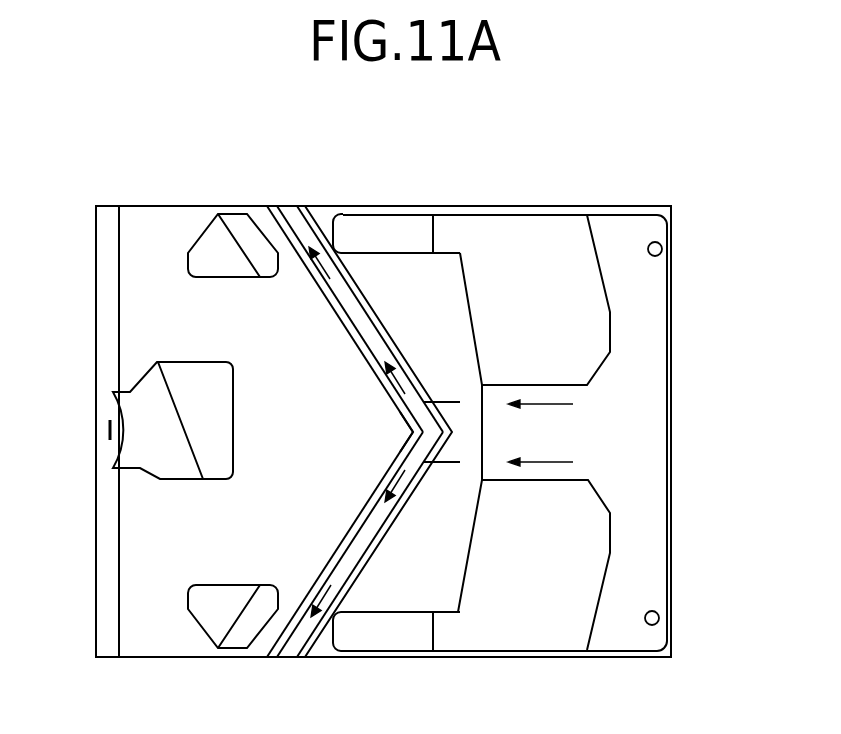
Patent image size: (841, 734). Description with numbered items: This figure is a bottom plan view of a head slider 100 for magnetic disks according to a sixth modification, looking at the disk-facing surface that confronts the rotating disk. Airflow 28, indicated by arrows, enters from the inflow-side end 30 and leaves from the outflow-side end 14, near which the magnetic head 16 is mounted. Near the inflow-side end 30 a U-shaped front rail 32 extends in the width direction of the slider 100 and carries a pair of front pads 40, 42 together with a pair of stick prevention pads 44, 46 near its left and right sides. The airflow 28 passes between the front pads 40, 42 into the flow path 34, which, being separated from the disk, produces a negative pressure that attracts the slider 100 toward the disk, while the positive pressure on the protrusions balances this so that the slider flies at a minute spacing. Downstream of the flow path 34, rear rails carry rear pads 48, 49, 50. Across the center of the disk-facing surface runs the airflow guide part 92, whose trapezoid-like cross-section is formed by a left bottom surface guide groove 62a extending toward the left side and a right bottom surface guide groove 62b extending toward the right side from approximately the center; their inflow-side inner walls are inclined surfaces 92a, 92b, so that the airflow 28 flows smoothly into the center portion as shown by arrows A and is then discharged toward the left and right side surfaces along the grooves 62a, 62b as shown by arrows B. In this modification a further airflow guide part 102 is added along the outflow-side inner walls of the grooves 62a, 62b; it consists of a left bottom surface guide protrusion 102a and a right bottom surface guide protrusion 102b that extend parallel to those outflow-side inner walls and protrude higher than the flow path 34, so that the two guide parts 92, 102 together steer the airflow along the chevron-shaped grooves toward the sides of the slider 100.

The slider 100 is at (481, 165).
The outflow-side end 14 is at (96, 574).
The magnetic head 16 is at (110, 430).
The airflow 28 is at (555, 404).
The inflow-side end 30 is at (671, 473).
The front rail 32 is at (657, 342).
The flow path 34 is at (385, 280).
The front pad 40 is at (552, 638).
The front pad 42 is at (552, 230).
The stick prevention pad 44 is at (660, 621).
The stick prevention pad 46 is at (668, 253).
The rear pad 48 is at (199, 628).
The rear pad 49 is at (157, 368).
The rear pad 50 is at (205, 236).
The left bottom surface guide groove 62a is at (370, 503).
The right bottom surface guide groove 62b is at (375, 363).
The airflow guide part 92 is at (431, 389).
The inclined surface 92a is at (383, 531).
The inclined surface 92b is at (384, 322).
The airflow guide part 102 is at (380, 457).
The left bottom surface guide protrusion 102a is at (322, 557).
The right bottom surface guide protrusion 102b is at (340, 328).
The arrows A is at (423, 462).
The arrows B is at (323, 278).